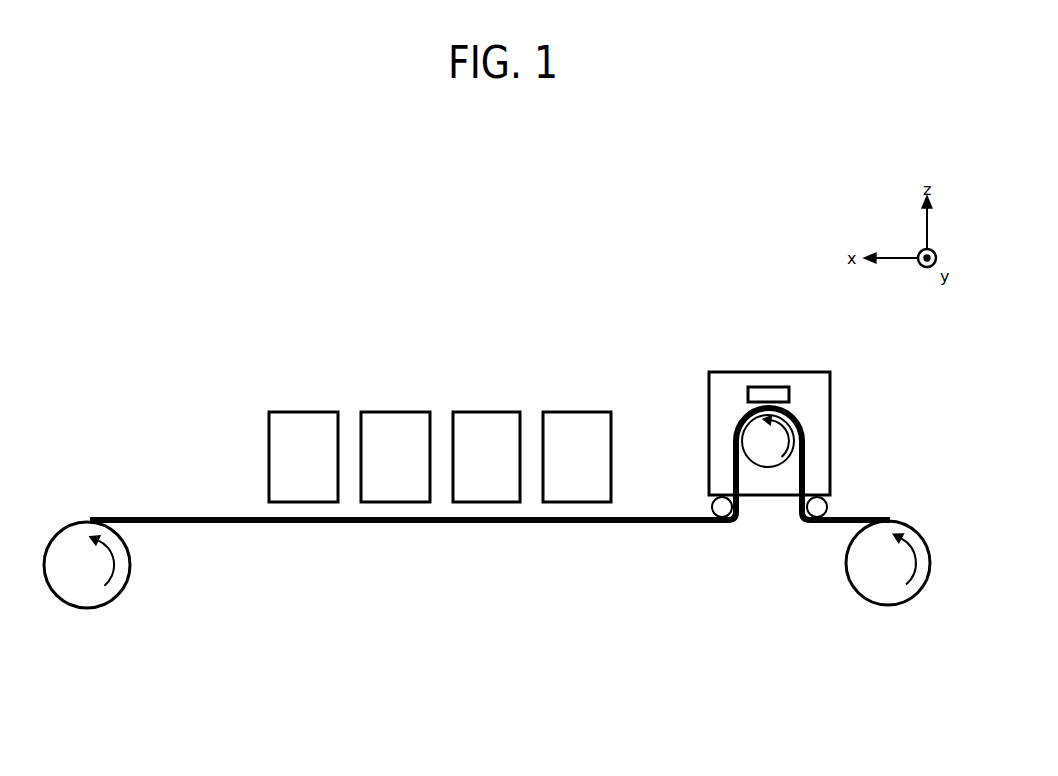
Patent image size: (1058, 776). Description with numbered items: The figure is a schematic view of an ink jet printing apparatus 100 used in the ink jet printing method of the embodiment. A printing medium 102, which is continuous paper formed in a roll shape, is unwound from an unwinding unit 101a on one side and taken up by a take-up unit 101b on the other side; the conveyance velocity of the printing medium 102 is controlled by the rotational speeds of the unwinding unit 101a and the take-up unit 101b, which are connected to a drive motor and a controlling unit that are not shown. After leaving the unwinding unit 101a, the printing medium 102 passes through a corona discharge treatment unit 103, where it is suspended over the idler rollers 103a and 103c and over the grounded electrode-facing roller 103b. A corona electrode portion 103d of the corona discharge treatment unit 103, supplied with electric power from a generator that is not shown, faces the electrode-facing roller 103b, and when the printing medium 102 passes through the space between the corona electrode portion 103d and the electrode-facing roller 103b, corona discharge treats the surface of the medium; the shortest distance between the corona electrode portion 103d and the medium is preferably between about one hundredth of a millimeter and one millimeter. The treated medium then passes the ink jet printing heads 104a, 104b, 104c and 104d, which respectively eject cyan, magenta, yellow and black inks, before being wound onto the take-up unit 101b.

The ink jet printing apparatus 100 is at (683, 242).
The unwinding unit 101a is at (913, 601).
The take-up unit 101b is at (120, 588).
The printing medium 102 is at (583, 524).
The corona discharge treatment unit 103 is at (770, 372).
The idler roller 103a is at (828, 504).
The electrode-facing roller 103b is at (770, 455).
The idler roller 103c is at (711, 508).
The corona electrode portion 103d is at (790, 395).
The ink jet printing head 104a is at (577, 412).
The ink jet printing head 104b is at (483, 412).
The ink jet printing head 104c is at (398, 412).
The ink jet printing head 104d is at (303, 412).